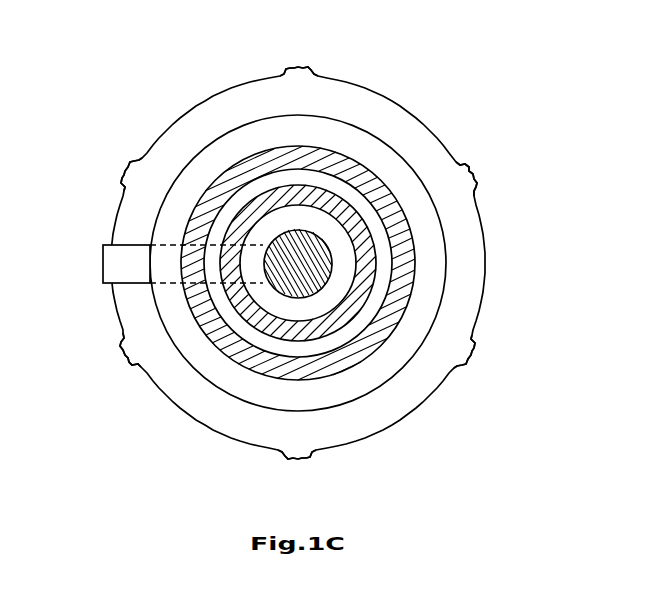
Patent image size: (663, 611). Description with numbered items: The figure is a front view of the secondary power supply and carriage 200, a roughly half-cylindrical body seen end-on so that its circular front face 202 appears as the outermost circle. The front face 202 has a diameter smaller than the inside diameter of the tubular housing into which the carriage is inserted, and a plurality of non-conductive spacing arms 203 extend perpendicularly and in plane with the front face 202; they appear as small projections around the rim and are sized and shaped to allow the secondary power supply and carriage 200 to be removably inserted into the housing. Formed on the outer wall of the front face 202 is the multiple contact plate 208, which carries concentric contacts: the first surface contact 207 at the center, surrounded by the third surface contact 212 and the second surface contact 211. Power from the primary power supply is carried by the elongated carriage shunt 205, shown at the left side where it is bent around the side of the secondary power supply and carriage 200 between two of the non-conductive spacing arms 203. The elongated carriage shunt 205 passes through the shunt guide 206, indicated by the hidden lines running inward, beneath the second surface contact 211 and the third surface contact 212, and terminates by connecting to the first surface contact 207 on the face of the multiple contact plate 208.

The secondary power supply and carriage 200 is at (153, 85).
The front face 202 is at (290, 107).
The non-conductive spacing arms 203 is at (293, 68).
The elongated carriage shunt 205 is at (103, 262).
The shunt guide 206 is at (148, 244).
The first surface contact 207 is at (316, 268).
The multiple contact plate 208 is at (319, 143).
The second surface contact 211 is at (337, 363).
The third surface contact 212 is at (334, 330).